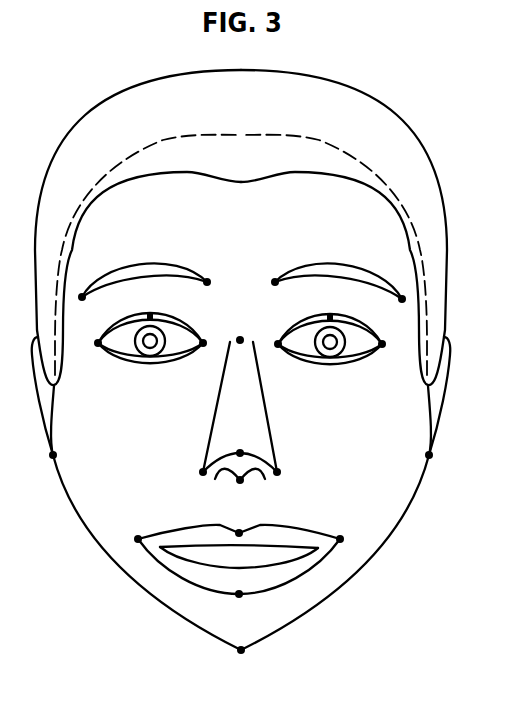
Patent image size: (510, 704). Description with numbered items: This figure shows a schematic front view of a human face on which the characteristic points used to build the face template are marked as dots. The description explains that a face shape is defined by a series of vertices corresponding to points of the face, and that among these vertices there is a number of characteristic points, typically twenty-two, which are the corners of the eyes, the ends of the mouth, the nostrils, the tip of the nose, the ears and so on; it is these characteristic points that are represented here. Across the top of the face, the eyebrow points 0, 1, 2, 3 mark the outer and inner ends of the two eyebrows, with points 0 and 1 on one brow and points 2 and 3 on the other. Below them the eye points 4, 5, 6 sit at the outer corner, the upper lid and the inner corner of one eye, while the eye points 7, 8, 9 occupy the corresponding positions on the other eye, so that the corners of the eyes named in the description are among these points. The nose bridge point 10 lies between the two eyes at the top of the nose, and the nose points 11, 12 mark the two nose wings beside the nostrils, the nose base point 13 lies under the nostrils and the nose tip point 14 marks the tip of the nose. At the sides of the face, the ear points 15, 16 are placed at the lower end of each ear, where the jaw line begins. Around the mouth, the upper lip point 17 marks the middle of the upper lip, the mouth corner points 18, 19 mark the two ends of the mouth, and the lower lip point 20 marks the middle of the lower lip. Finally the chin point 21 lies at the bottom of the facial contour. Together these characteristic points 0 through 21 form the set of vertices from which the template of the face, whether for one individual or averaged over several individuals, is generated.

The left eyebrow outer end landmark 0 is at (76, 286).
The left eyebrow inner end landmark 1 is at (209, 269).
The right eyebrow inner end landmark 2 is at (272, 270).
The right eyebrow outer end landmark 3 is at (406, 288).
The left eye outer corner landmark 4 is at (92, 333).
The left eye upper eyelid center landmark 5 is at (150, 303).
The left eye inner corner landmark 6 is at (206, 333).
The right eye inner corner landmark 7 is at (275, 332).
The right eye upper eyelid center landmark 8 is at (330, 305).
The right eye outer corner landmark 9 is at (388, 334).
The nose bridge landmark 10 is at (242, 327).
The left nose wing landmark 11 is at (190, 472).
The right nose wing landmark 12 is at (290, 472).
The nose base (subnasale) landmark 13 is at (228, 490).
The nose tip landmark 14 is at (240, 440).
The left ear lobe / jaw landmark 15 is at (41, 464).
The right ear lobe / jaw landmark 16 is at (439, 467).
The upper lip center landmark 17 is at (248, 519).
The left mouth corner landmark 18 is at (126, 535).
The right mouth corner landmark 19 is at (352, 535).
The lower lip center landmark 20 is at (238, 608).
The chin landmark 21 is at (238, 663).